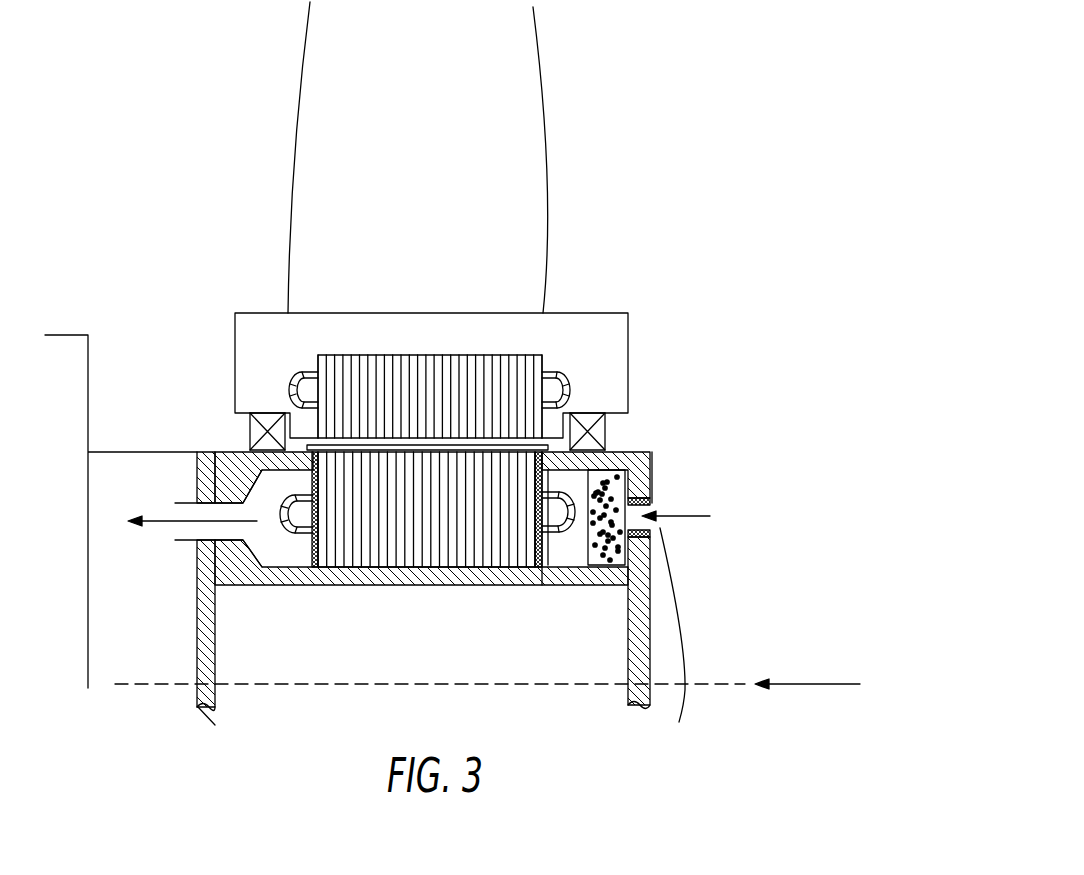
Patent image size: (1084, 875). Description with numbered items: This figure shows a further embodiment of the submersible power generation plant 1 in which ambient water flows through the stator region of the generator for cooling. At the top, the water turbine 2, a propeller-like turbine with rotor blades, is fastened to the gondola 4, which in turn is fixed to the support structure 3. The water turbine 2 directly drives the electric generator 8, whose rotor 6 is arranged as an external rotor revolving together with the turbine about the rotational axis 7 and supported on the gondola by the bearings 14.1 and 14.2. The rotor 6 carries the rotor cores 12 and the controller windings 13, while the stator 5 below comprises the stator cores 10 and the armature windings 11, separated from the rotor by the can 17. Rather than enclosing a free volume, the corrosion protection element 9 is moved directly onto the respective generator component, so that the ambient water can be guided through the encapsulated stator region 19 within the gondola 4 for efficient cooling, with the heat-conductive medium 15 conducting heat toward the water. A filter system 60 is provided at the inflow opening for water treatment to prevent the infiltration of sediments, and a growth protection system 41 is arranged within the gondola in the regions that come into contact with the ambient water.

The submersible power generation plant 1 is at (689, 652).
The water turbine 2 is at (508, 168).
The support structure 3 is at (51, 385).
The gondola 4 is at (274, 645).
The stator 5 is at (535, 470).
The rotor 6 is at (522, 388).
The rotational axis 7 is at (708, 683).
The electric generator 8 is at (418, 630).
The corrosion protection element 9 is at (316, 566).
The stator cores 10 is at (500, 552).
The armature windings 11 is at (560, 552).
The rotor cores 12 is at (485, 319).
The controller windings 13 is at (293, 382).
The bearing 14.1 is at (258, 438).
The bearing 14.2 is at (595, 428).
The heat-conductive medium 15 is at (657, 465).
The can 17 is at (543, 440).
The encapsulated stator region 19 is at (232, 553).
The growth protection system 41 is at (657, 502).
The filter system 60 is at (605, 548).